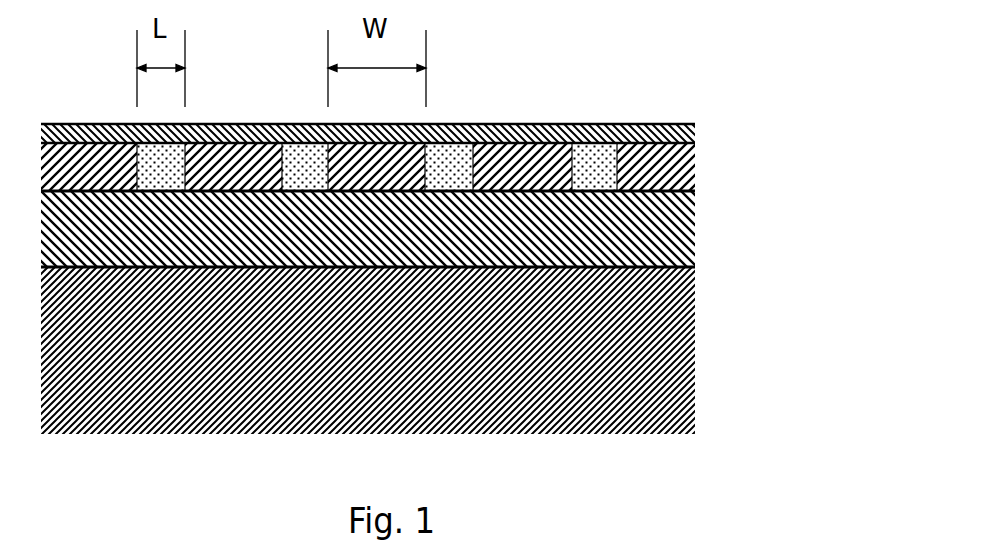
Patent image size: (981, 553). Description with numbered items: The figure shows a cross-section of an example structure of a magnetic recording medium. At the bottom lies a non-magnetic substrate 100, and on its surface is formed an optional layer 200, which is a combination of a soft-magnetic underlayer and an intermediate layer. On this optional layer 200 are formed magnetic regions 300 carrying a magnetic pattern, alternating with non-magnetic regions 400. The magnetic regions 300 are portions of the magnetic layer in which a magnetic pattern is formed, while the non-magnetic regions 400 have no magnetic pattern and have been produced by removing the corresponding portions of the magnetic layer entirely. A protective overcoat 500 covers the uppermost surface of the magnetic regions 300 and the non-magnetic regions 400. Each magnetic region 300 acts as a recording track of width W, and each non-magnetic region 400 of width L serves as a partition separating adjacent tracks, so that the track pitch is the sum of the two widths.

The non-magnetic substrate 100 is at (694, 339).
The soft-magnetic underlayer and intermediate layer 200 is at (695, 219).
The magnetic layer 300 is at (694, 161).
The non-magnetic region 400 is at (592, 162).
The protective overcoat 500 is at (680, 124).